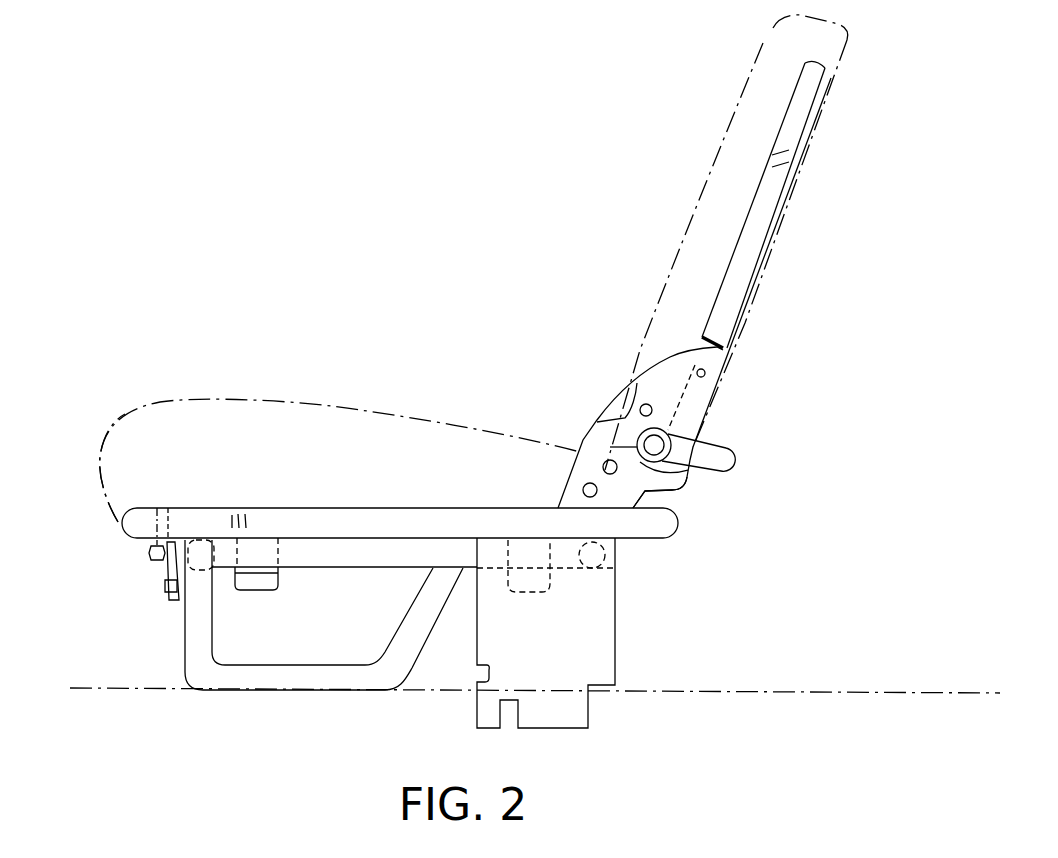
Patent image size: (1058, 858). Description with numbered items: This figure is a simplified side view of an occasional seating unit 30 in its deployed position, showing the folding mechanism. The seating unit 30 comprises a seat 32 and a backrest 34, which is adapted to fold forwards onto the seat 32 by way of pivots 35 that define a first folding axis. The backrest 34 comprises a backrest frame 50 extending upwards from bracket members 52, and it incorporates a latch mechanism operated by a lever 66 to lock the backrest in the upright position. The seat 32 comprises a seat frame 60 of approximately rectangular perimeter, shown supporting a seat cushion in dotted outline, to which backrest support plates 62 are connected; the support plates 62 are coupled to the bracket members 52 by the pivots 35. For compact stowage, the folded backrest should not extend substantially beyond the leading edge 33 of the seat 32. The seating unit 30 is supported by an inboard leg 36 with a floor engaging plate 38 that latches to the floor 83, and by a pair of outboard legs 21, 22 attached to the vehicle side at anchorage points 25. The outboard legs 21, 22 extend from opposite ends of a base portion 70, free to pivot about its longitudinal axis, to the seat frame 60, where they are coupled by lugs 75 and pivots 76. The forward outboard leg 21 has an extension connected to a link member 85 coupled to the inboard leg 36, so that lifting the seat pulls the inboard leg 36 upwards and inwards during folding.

The occasional seating unit 30 is at (478, 196).
The seat 32 is at (320, 403).
The leading edge 33 is at (100, 455).
The backrest 34 is at (760, 47).
The pivots 35 is at (641, 406).
The inboard leg 36 is at (298, 681).
The floor engaging plate 38 is at (600, 653).
The backrest frame 50 is at (795, 140).
The bracket members 52 is at (683, 404).
The seat frame 60 is at (373, 513).
The backrest support plates 62 is at (643, 478).
The lever 66 is at (723, 460).
The base portion 70 is at (358, 567).
The forward outboard leg 21 is at (200, 530).
The outboard leg 22 is at (612, 560).
The anchorage points 25 is at (260, 580).
The lugs 75 is at (157, 567).
The pivots 76 is at (153, 552).
The floor 83 is at (815, 693).
The link member 85 is at (160, 597).